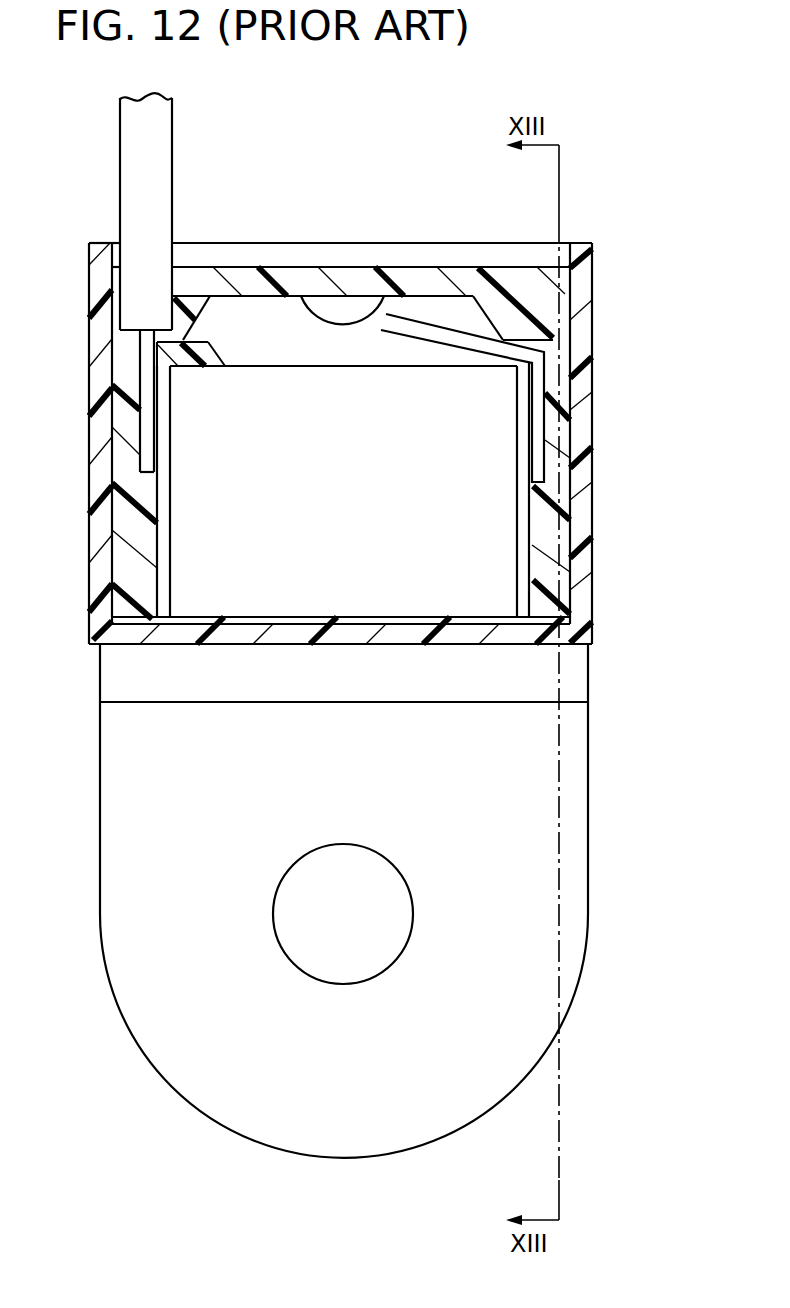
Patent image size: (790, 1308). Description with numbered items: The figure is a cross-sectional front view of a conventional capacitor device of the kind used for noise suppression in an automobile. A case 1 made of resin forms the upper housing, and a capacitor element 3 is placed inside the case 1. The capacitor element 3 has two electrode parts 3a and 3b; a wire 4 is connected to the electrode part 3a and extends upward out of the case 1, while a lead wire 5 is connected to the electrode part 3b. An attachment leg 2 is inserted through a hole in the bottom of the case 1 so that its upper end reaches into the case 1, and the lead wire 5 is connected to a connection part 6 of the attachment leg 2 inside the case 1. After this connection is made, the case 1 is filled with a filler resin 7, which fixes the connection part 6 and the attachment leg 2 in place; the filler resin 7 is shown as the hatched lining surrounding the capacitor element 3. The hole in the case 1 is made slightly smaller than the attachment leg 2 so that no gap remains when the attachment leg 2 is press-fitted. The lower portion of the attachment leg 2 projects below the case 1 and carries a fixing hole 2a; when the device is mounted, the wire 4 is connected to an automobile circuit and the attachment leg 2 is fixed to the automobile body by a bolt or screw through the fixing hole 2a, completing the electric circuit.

The case 1 is at (95, 425).
The attachment leg 2 is at (243, 320).
The fixing hole 2a is at (297, 900).
The capacitor element 3 is at (180, 528).
The electrode part 3a is at (160, 498).
The electrode part 3b is at (530, 500).
The wire 4 is at (131, 181).
The lead wire 5 is at (420, 335).
The connection part 6 is at (330, 313).
The filler resin 7 is at (545, 300).